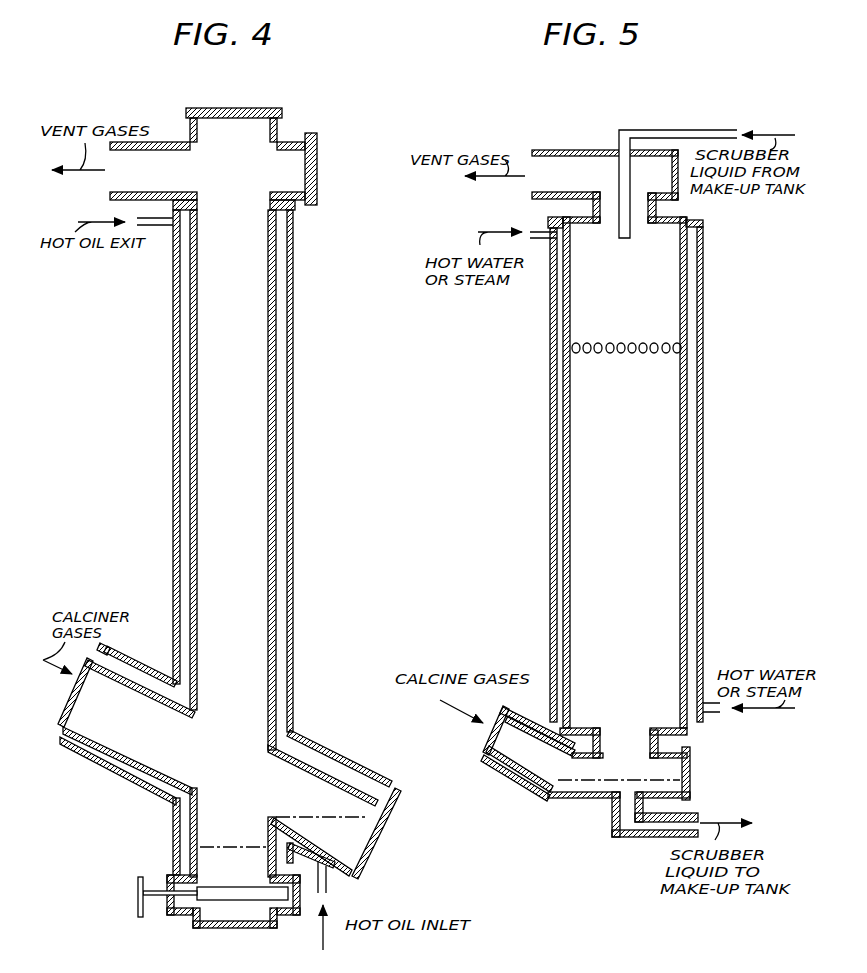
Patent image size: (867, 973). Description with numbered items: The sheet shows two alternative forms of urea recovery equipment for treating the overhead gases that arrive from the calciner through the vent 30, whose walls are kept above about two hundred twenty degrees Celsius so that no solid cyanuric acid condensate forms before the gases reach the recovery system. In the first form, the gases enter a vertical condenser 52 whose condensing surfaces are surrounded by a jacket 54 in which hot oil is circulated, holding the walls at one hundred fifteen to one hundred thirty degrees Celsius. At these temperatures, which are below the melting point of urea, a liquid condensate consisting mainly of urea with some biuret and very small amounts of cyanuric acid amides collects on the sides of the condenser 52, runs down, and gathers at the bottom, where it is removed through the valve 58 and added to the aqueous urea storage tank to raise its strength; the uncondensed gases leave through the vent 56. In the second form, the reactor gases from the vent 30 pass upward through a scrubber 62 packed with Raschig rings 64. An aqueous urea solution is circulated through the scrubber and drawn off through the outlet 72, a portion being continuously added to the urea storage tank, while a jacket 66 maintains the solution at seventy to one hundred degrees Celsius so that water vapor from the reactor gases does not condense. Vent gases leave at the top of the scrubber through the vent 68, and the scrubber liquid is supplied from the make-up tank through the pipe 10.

In FIG. 4, the vent 56 is at (155, 157).
In FIG. 4, the condenser 52 is at (252, 373).
In FIG. 4, the jacket 54 is at (285, 490).
In FIG. 4, the vent 30 is at (127, 763).
In FIG. 5, the vent 30 is at (518, 755).
In FIG. 4, the valve 58 is at (252, 870).
In FIG. 5, the vent gas outlet 68 is at (583, 125).
In FIG. 5, the scrubber liquid inlet pipe 10 is at (708, 131).
In FIG. 5, the jacket 66 is at (697, 307).
In FIG. 5, the Raschig rings 64 is at (673, 523).
In FIG. 5, the scrubber 62 is at (673, 403).
In FIG. 5, the outlet 72 is at (625, 836).